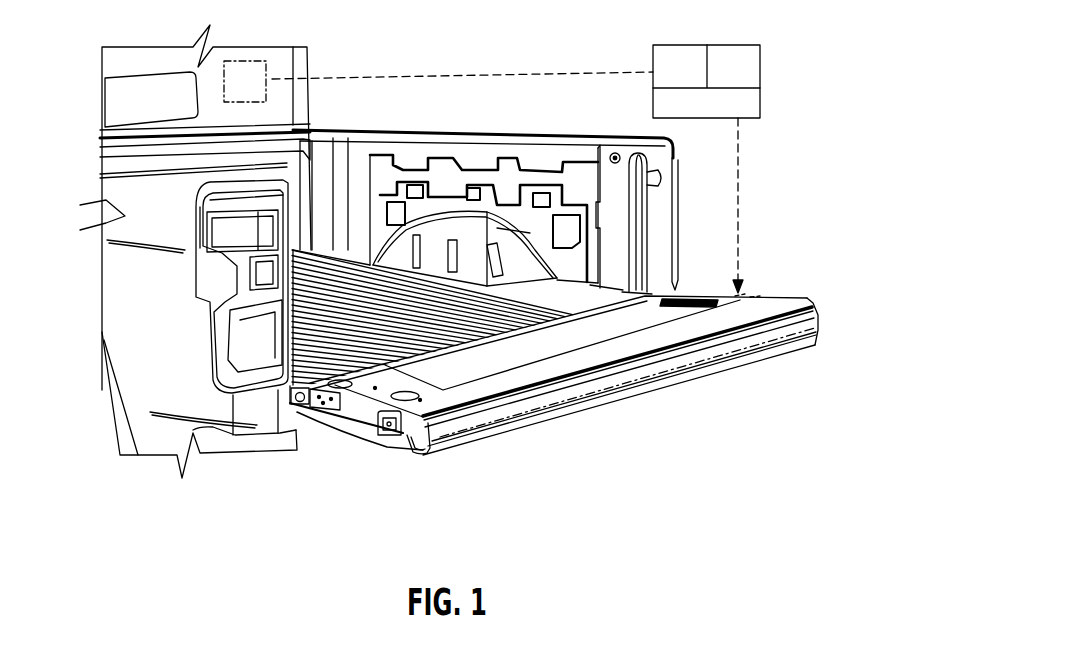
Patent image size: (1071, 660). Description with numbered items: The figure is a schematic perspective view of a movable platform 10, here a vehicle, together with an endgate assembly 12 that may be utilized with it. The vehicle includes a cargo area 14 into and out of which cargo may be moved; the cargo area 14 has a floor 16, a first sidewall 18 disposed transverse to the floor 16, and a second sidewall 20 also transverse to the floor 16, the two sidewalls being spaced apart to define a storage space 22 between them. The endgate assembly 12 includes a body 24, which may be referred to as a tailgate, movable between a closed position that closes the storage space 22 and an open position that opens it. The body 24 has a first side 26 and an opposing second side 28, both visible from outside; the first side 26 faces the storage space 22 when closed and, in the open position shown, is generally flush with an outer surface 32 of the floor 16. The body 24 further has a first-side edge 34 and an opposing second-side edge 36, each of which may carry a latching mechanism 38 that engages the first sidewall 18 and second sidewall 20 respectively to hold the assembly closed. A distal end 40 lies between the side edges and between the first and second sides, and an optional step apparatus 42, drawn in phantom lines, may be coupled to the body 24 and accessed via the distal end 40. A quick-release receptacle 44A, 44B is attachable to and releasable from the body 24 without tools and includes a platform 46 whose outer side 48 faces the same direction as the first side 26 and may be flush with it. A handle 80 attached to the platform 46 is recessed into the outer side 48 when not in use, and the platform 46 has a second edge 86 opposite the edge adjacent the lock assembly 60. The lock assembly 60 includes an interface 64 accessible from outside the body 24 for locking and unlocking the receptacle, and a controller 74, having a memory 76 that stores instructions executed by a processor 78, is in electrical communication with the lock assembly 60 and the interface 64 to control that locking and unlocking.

The movable platform 10 is at (258, 47).
The endgate assembly 12 is at (364, 488).
The cargo area 14 is at (422, 118).
The floor 16 is at (350, 277).
The first sidewall 18 is at (548, 157).
The second sidewall 20 is at (117, 407).
The storage space 22 is at (618, 216).
The body 24 is at (803, 293).
The first side 26 is at (500, 380).
The second side 28 is at (380, 440).
The outer surface 32 is at (468, 303).
The first-side edge 34 is at (780, 293).
The second-side edge 36 is at (370, 417).
The latching mechanism 38 is at (422, 447).
The distal end 40 is at (760, 327).
The step apparatus 42 is at (610, 427).
The quick-release receptacle 44A is at (624, 386).
The quick-release receptacle 44B is at (573, 333).
The platform 46 is at (562, 395).
The outer side 48 is at (605, 347).
The lock assembly 60 is at (292, 62).
The interface 64 is at (256, 91).
The controller 74 is at (760, 102).
The memory 76 is at (692, 77).
The processor 78 is at (743, 77).
The handle 80 is at (787, 338).
The second edge 86 is at (332, 438).